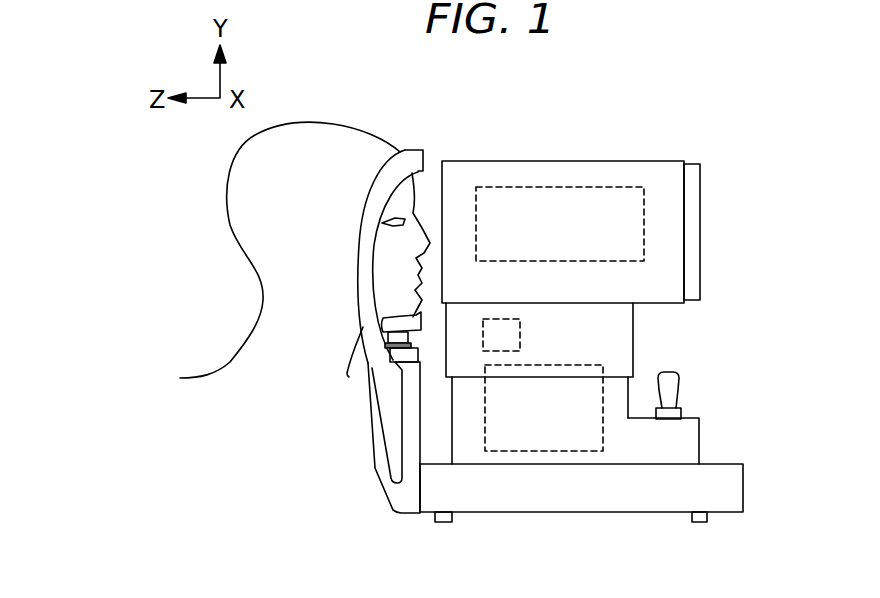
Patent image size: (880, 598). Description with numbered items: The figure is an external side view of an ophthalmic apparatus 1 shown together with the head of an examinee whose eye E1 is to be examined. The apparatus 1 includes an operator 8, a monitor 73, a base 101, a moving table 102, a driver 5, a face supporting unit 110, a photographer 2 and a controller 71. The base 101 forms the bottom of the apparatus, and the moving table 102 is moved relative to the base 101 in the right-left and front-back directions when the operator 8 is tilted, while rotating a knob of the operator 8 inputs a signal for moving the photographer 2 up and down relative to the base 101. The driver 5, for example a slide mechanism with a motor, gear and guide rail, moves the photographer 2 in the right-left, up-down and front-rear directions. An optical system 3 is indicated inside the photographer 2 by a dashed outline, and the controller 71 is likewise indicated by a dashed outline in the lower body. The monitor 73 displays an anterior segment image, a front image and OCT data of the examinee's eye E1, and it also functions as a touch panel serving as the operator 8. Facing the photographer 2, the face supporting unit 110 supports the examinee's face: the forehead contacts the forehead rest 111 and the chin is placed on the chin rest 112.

The ophthalmic apparatus 1 is at (730, 95).
The photographer 2 is at (619, 170).
The measurement optical system 3 is at (498, 187).
The driver 5 is at (510, 335).
The operator 8 is at (720, 288).
The controller 71 is at (538, 433).
The monitor 73 is at (695, 182).
The base 101 is at (735, 487).
The moving table 102 is at (688, 445).
The face supporting unit 110 is at (354, 322).
The forehead rest 111 is at (417, 150).
The chin rest 112 is at (390, 323).
The examinee's eye E1 is at (390, 217).